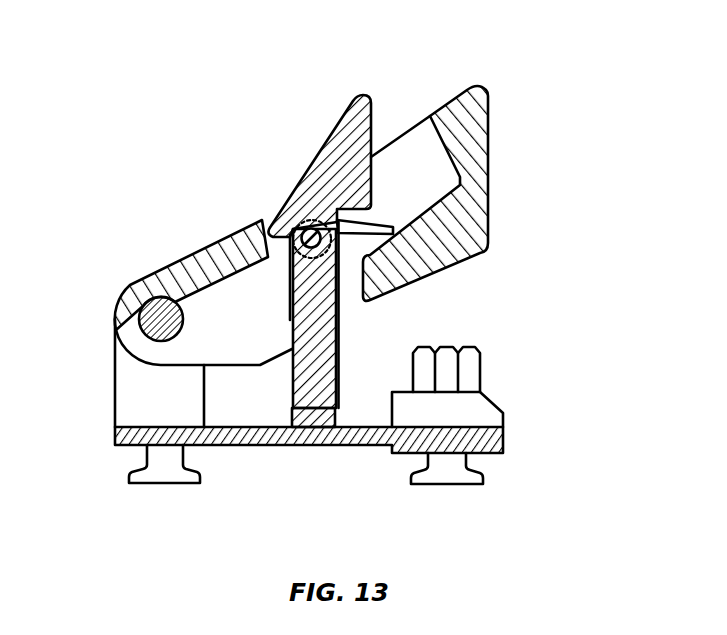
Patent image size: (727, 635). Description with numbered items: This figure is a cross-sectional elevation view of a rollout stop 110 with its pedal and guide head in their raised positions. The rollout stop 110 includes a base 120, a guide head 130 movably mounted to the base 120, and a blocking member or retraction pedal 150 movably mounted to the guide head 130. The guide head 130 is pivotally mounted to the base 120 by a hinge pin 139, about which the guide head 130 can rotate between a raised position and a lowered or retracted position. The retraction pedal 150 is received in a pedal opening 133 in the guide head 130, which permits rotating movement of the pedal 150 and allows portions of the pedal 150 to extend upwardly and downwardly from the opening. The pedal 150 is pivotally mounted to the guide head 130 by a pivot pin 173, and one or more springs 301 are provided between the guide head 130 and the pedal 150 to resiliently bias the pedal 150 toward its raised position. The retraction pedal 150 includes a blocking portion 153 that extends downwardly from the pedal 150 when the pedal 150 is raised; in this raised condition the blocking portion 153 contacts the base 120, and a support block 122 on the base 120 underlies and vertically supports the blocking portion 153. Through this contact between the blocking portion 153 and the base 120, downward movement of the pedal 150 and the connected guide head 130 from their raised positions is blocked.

The rollout stop 110 is at (523, 60).
The base 120 is at (265, 446).
The support block 122 is at (300, 413).
The guide head 130 is at (490, 177).
The pedal opening 133 is at (417, 153).
The hinge pin 139 is at (147, 313).
The retraction pedal 150 is at (317, 147).
The blocking portion 153 is at (340, 355).
The pivot pin 173 is at (287, 220).
The spring 301 is at (413, 267).